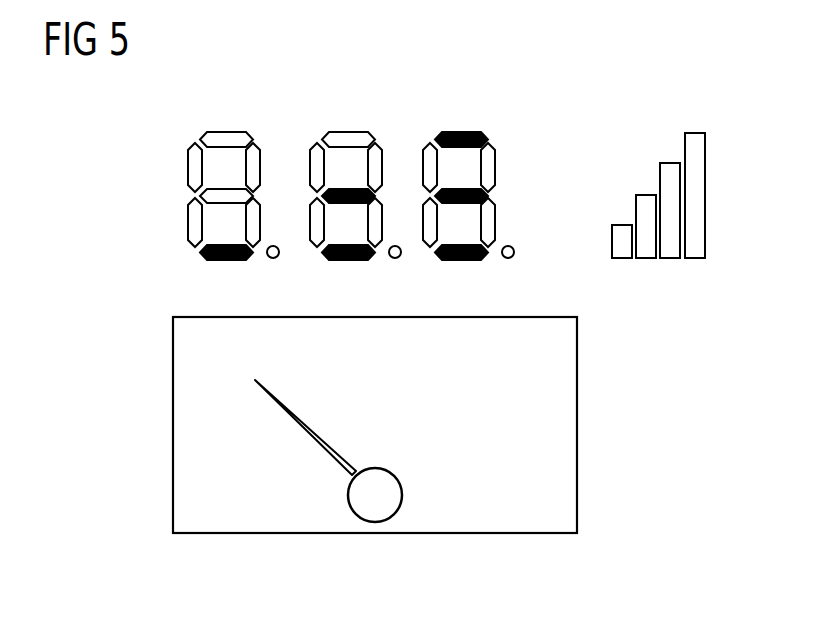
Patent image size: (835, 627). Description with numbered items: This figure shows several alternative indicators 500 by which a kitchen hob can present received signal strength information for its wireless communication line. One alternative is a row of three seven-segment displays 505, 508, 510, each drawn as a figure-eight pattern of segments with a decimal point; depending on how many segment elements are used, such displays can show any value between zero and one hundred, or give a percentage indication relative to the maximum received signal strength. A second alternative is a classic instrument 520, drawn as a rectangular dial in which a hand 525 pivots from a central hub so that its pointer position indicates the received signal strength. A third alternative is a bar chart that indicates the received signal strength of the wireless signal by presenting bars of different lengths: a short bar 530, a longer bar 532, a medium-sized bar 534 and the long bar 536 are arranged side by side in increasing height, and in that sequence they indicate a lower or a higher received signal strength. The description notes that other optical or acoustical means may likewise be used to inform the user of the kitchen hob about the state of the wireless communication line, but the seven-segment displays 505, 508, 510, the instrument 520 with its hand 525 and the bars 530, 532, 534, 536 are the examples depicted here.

The indicators 500 is at (652, 79).
The seven-segment display 505 is at (220, 127).
The seven-segment display 508 is at (340, 127).
The seven-segment display 510 is at (457, 127).
The classic instrument 520 is at (268, 493).
The hand 525 is at (375, 493).
The short bar 530 is at (625, 247).
The longer bar 532 is at (645, 247).
The medium-sized bar 534 is at (672, 247).
The long bar 536 is at (695, 195).